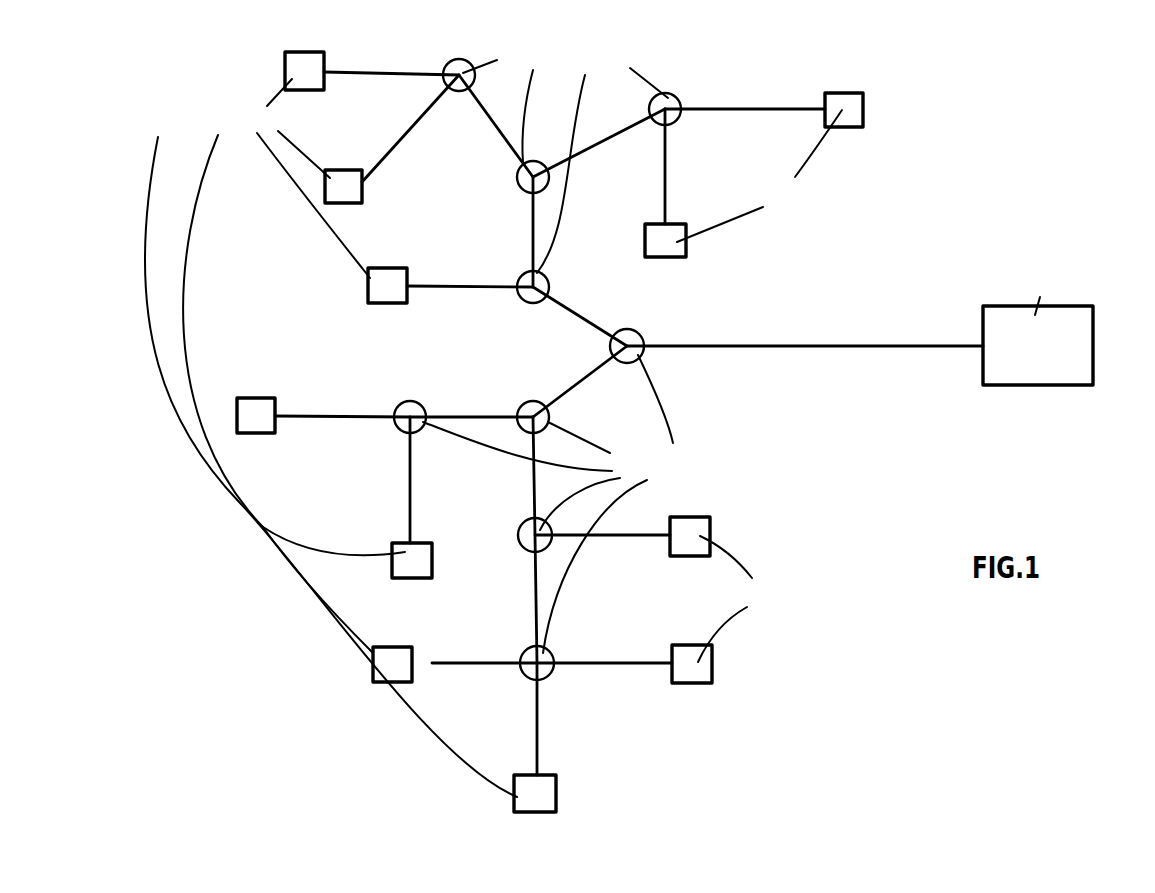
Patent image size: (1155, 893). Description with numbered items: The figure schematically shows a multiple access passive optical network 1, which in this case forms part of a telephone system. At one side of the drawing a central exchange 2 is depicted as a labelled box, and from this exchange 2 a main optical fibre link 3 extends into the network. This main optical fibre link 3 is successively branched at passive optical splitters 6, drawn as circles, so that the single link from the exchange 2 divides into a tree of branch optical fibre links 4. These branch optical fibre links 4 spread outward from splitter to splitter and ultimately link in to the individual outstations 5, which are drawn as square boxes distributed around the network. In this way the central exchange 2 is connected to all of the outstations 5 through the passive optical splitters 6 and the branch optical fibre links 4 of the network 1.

The multiple access passive optical network 1 is at (915, 240).
The central exchange 2 is at (1048, 357).
The main optical fibre link 3 is at (795, 347).
The branch optical fibre links 4 is at (580, 380).
The outstations 5 is at (255, 433).
The passive optical splitters 6 is at (550, 423).